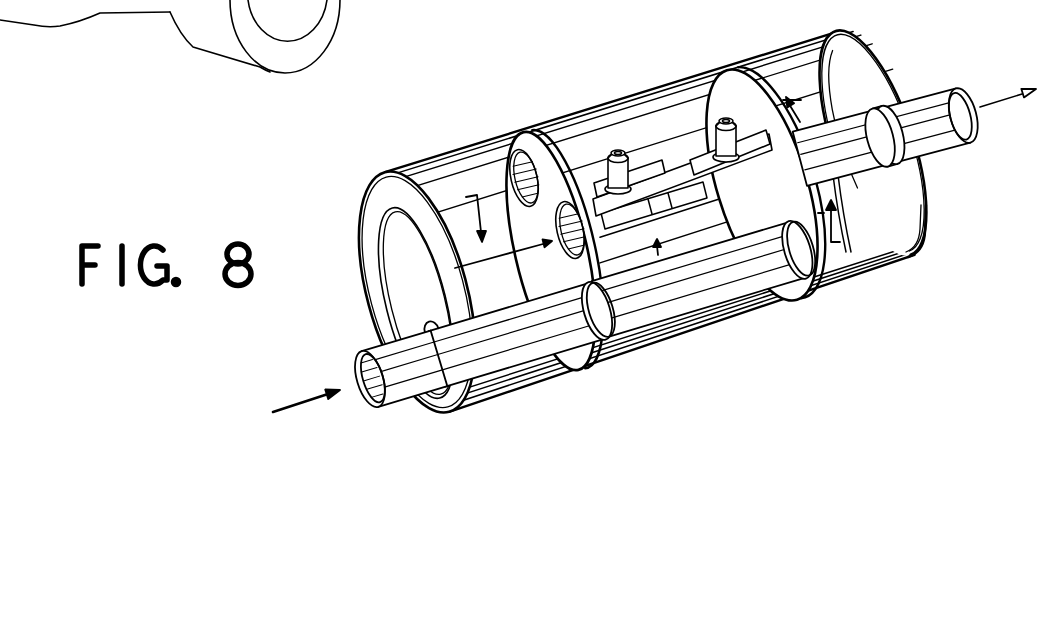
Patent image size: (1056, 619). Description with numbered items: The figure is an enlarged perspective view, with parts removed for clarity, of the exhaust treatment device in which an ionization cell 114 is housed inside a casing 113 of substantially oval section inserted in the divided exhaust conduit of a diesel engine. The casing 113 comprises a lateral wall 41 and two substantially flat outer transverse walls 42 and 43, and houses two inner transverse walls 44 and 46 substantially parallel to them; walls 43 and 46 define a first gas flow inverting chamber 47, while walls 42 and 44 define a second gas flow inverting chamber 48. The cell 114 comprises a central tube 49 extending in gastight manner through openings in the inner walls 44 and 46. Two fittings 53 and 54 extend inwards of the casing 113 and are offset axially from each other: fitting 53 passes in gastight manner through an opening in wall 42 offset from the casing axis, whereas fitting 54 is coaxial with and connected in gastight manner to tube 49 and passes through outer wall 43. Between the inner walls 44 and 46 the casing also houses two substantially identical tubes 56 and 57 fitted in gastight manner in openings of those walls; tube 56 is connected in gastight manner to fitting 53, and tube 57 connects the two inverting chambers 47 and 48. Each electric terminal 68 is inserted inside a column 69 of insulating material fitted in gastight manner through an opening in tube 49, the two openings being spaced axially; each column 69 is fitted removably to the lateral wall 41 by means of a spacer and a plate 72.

The lateral wall 41 is at (472, 148).
The outer transverse wall 42 is at (390, 272).
The outer transverse wall 43 is at (897, 190).
The inner transverse wall 44 is at (612, 333).
The inner transverse wall 46 is at (813, 242).
The first gas flow inverting chamber 47 is at (848, 240).
The second gas flow inverting chamber 48 is at (422, 184).
The central tube 49 is at (643, 240).
The fitting 53 is at (392, 352).
The fitting 54 is at (935, 105).
The tube 56 is at (746, 270).
The tube 57 is at (562, 150).
The electric terminal 68 is at (723, 121).
The column 69 is at (660, 193).
The plate 72 is at (690, 190).
The casing 113 is at (703, 66).
The ionization cell 114 is at (650, 195).